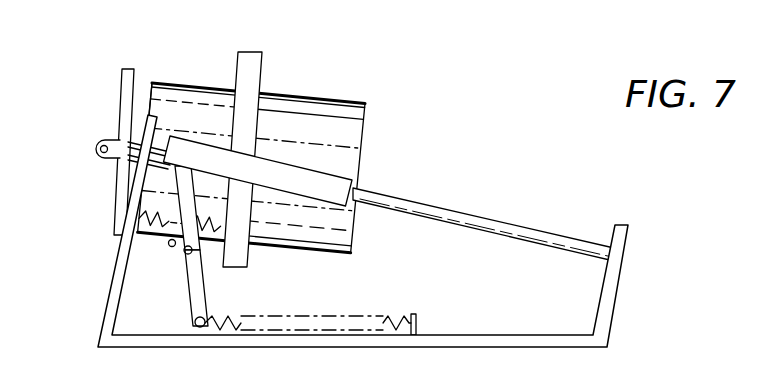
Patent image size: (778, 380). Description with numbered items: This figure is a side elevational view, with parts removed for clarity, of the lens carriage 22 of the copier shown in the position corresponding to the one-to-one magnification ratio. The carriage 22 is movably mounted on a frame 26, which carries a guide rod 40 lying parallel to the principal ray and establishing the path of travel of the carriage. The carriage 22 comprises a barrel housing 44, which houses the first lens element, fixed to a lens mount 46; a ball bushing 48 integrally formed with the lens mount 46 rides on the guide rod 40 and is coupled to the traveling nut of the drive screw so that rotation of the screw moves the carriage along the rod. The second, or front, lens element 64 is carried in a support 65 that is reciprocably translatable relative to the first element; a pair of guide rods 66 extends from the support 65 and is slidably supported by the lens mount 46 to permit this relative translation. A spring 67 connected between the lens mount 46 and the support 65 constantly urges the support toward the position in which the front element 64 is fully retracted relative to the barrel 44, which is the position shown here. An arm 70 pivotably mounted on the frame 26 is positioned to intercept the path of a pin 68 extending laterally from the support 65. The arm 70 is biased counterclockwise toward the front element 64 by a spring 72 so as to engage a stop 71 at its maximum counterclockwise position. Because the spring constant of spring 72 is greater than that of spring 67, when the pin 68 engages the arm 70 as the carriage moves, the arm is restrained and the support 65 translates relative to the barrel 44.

The carriage 22 is at (168, 84).
The frame 26 is at (113, 275).
The guide rod 40 is at (423, 207).
The barrel housing 44 is at (338, 98).
The lens mount 46 is at (248, 62).
The ball bushing 48 is at (323, 180).
The second lens element 64 is at (117, 79).
The support 65 is at (125, 132).
The guide rods 66 is at (135, 152).
The spring 67 is at (142, 232).
The pin 68 is at (96, 149).
The arm 70 is at (187, 292).
The stop 71 is at (168, 245).
The spring 72 is at (388, 316).